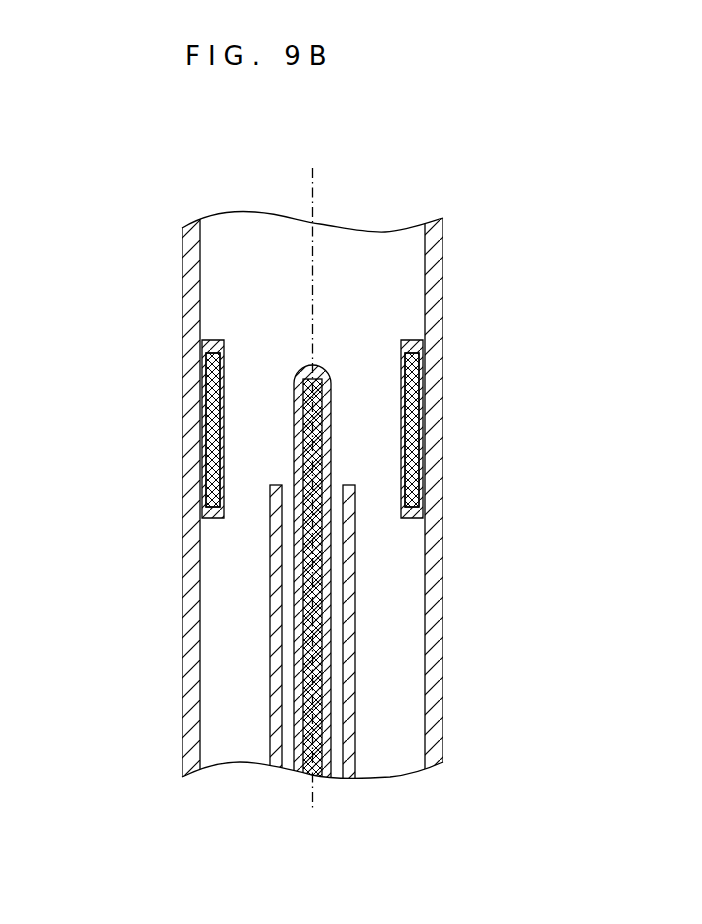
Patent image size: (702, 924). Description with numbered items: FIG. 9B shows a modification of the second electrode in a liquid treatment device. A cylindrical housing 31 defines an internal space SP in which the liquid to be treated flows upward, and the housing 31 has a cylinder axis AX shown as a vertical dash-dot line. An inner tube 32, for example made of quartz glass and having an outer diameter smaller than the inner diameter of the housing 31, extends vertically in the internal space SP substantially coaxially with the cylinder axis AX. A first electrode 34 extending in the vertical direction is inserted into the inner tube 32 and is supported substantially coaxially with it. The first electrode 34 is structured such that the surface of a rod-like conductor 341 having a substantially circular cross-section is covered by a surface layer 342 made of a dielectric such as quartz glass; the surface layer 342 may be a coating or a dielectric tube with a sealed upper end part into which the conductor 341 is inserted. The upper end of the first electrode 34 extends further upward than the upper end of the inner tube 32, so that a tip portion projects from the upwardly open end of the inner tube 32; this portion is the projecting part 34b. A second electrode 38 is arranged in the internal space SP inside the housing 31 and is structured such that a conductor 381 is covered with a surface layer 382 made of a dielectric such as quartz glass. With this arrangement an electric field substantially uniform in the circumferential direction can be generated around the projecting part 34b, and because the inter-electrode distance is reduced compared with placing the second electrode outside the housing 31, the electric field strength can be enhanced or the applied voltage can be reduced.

The housing 31 is at (183, 548).
The inner tube 32 is at (350, 653).
The first electrode 34 is at (194, 577).
The conductor 341 is at (295, 570).
The surface layer 342 is at (300, 688).
The projecting part 34b is at (291, 378).
The second electrode 38 is at (311, 429).
The conductor 381 is at (212, 371).
The surface layer 382 is at (214, 444).
The cylinder axis AX is at (314, 475).
The internal space SP is at (358, 317).